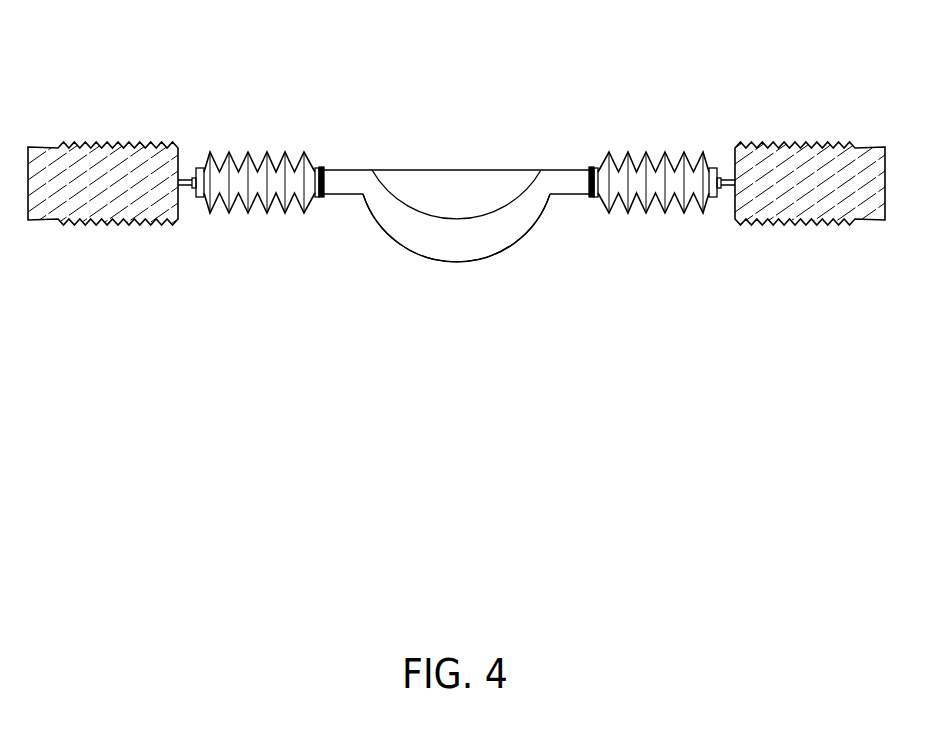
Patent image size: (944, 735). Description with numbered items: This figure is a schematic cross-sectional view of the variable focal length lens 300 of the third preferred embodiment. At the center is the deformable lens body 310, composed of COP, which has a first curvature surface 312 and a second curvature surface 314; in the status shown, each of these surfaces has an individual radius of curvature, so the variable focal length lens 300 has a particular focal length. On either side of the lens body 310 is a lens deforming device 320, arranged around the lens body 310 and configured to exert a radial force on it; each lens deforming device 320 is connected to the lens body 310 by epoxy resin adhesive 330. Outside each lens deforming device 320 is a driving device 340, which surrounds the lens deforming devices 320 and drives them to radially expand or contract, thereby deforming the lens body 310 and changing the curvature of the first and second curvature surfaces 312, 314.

The variable focal length lens 300 is at (266, 44).
The deformable lens body 310 is at (407, 232).
The first curvature surface 312 is at (436, 208).
The second curvature surface 314 is at (492, 266).
The lens deforming device 320 is at (253, 193).
The epoxy resin adhesive 330 is at (327, 167).
The driving device 340 is at (80, 196).